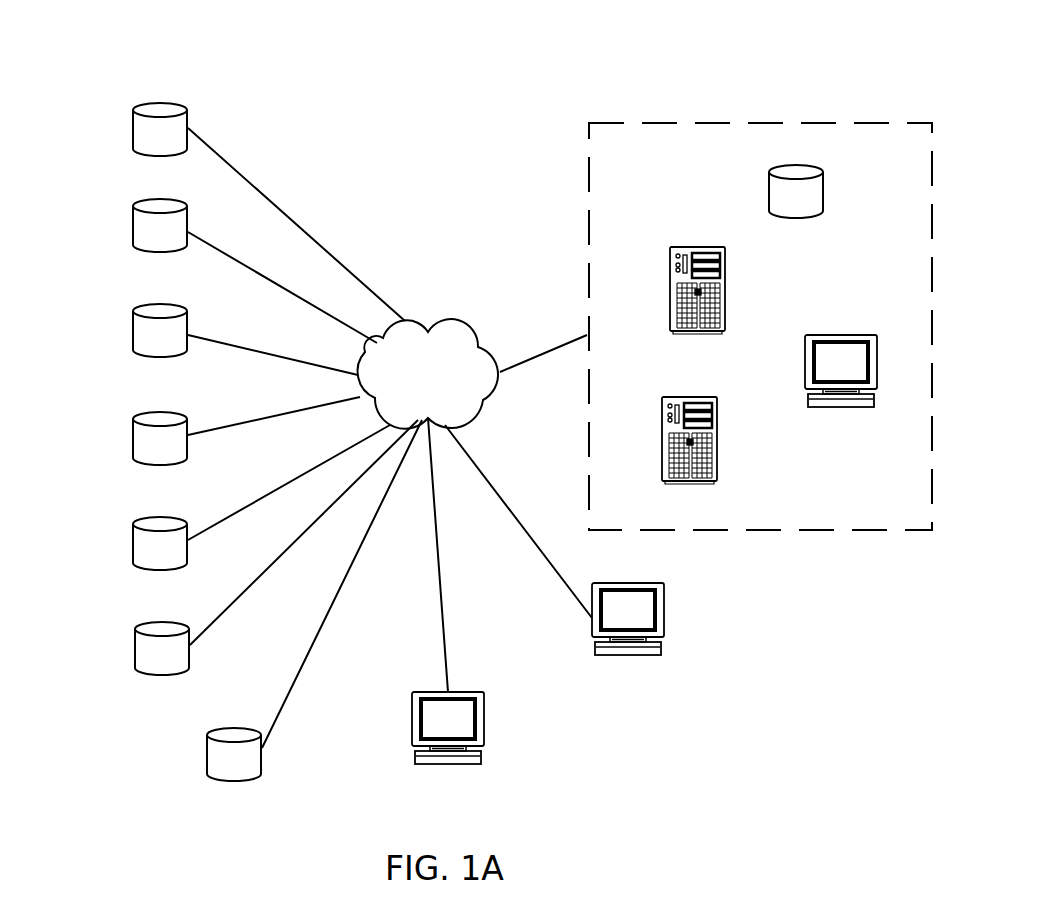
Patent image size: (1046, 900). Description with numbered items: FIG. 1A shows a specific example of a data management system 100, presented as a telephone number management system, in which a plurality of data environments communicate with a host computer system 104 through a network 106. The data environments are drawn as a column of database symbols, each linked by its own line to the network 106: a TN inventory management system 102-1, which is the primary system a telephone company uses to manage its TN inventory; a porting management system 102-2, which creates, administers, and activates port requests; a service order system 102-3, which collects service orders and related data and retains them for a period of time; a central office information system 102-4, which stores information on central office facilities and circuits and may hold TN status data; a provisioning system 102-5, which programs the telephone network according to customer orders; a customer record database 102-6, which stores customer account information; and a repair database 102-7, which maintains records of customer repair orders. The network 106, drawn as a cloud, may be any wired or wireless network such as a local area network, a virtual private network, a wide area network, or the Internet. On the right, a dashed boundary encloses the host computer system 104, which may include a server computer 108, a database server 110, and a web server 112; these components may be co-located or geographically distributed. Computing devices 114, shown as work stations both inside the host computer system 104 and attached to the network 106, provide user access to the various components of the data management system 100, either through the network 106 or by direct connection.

The data management system 100 is at (400, 78).
The TN inventory management system 102-1 is at (133, 126).
The porting management system 102-2 is at (133, 222).
The service order system 102-3 is at (133, 327).
The central office information system 102-4 is at (133, 435).
The provisioning system 102-5 is at (133, 540).
The customer record database 102-6 is at (135, 645).
The repair database 102-7 is at (207, 751).
The host computer system 104 is at (777, 530).
The network 106 is at (443, 382).
The server computer 108 is at (726, 283).
The database server 110 is at (823, 188).
The web server 112 is at (717, 436).
The computing device 114 is at (843, 407).